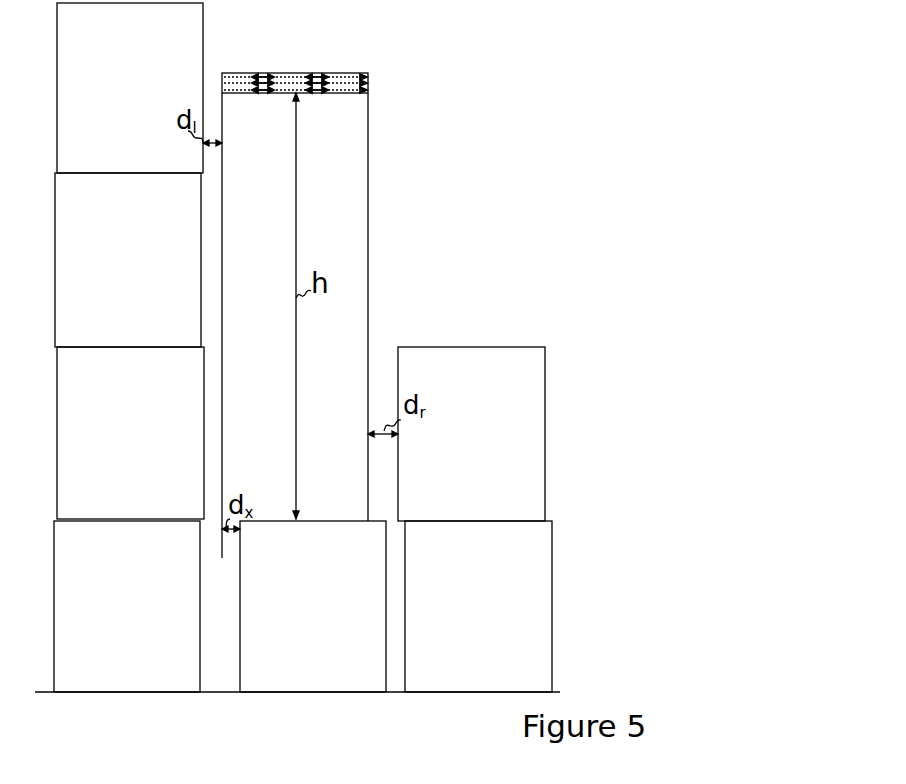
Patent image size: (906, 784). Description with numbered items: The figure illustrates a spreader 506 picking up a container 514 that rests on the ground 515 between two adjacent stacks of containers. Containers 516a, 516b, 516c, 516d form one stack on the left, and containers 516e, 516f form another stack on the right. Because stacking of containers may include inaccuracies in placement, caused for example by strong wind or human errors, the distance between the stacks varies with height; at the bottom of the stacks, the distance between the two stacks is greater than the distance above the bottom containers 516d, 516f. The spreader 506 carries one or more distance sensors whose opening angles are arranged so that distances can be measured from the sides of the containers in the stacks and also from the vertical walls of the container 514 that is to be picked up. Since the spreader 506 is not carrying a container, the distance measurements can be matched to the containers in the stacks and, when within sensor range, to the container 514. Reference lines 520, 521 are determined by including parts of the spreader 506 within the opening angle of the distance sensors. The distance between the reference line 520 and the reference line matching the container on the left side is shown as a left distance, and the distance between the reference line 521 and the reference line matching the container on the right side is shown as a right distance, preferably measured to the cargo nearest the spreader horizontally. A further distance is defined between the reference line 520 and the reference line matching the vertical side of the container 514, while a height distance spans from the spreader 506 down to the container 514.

The spreader 506 is at (368, 78).
The container 514 is at (313, 606).
The ground 515 is at (297, 714).
The container 516a is at (130, 88).
The container 516b is at (128, 260).
The container 516c is at (130, 433).
The container 516d is at (127, 606).
The container 516e is at (471, 434).
The container 516f is at (478, 606).
The reference line 520 is at (222, 173).
The reference line 521 is at (368, 163).